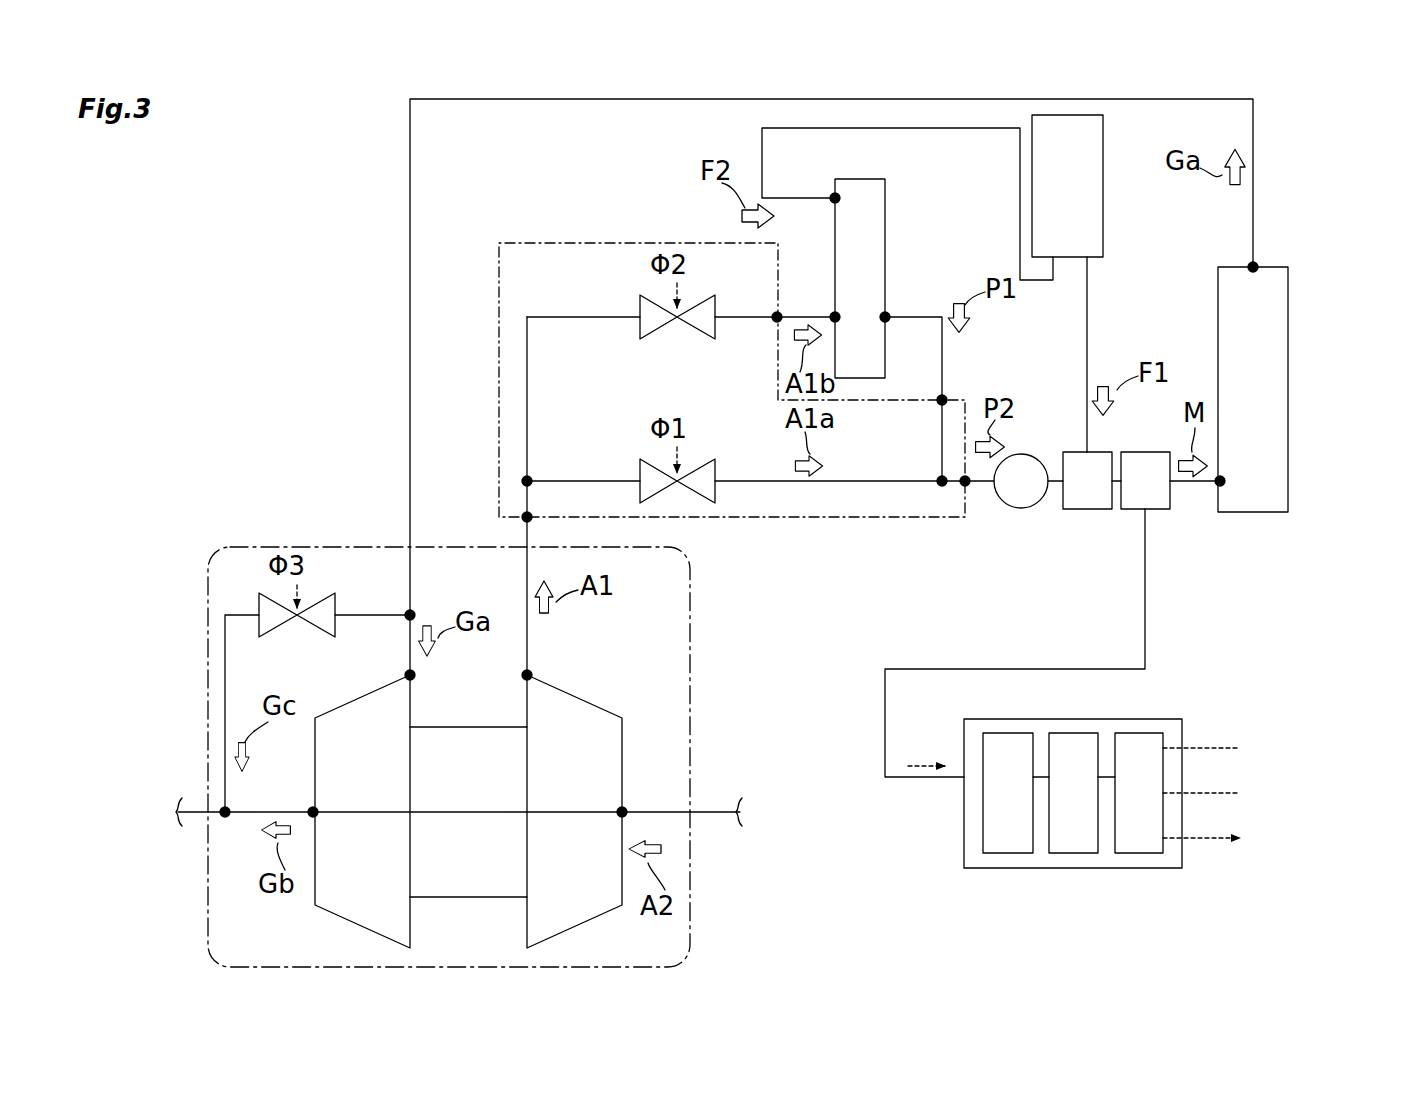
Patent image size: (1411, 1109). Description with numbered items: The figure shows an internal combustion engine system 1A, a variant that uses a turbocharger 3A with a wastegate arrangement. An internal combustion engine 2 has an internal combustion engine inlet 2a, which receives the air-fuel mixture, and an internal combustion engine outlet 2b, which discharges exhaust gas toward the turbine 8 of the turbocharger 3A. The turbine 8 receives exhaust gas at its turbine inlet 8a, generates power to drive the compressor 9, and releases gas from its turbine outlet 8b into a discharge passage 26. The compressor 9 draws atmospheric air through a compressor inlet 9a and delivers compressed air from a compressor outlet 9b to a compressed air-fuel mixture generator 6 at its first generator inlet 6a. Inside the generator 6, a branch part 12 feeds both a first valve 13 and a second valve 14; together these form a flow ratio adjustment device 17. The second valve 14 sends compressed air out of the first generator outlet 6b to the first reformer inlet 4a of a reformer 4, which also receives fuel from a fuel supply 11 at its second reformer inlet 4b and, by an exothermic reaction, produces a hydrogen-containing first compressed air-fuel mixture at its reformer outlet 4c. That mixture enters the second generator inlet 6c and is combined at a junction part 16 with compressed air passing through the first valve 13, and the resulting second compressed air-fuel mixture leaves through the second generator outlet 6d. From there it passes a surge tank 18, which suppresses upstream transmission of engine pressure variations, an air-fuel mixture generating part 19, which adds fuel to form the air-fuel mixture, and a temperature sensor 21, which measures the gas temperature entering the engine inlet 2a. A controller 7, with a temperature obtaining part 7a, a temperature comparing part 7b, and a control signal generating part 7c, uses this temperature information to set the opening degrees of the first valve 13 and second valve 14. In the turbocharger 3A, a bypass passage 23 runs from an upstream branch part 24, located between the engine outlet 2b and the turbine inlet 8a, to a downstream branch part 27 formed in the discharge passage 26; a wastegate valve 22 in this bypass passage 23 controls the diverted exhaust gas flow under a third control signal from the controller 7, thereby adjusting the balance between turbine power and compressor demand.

The internal combustion engine system 1A is at (1282, 188).
The internal combustion engine 2 is at (1218, 293).
The internal combustion engine inlet 2a is at (1220, 484).
The internal combustion engine outlet 2b is at (1253, 265).
The turbocharger 3A is at (372, 546).
The reformer 4 is at (885, 255).
The first reformer inlet 4a is at (835, 315).
The second reformer inlet 4b is at (835, 196).
The reformer outlet 4c is at (886, 315).
The compressed air-fuel mixture generator 6 is at (498, 392).
The first generator inlet 6a is at (525, 517).
The first generator outlet 6b is at (777, 320).
The second generator inlet 6c is at (943, 398).
The second generator outlet 6d is at (965, 484).
The controller 7 is at (1069, 796).
The temperature obtaining part 7a is at (1005, 853).
The temperature comparing part 7b is at (1072, 853).
The control signal generating part 7c is at (1140, 853).
The turbine 8 is at (318, 714).
The turbine inlet 8a is at (408, 673).
The turbine outlet 8b is at (312, 809).
The compressor 9 is at (588, 696).
The compressor inlet 9a is at (622, 809).
The compressor outlet 9b is at (529, 673).
The fuel supply 11 is at (1103, 208).
The branch part 12 is at (528, 480).
The first valve 13 is at (640, 468).
The second valve 14 is at (640, 308).
The junction part 16 is at (942, 478).
The flow ratio adjustment device 17 is at (728, 464).
The surge tank 18 is at (1025, 455).
The air-fuel mixture generating part 19 is at (1077, 510).
The temperature sensor 21 is at (1143, 432).
The wastegate valve 22 is at (335, 605).
The bypass passage 23 is at (225, 685).
The upstream branch part 24 is at (412, 613).
The discharge passage 26 is at (184, 810).
The downstream branch part 27 is at (226, 815).